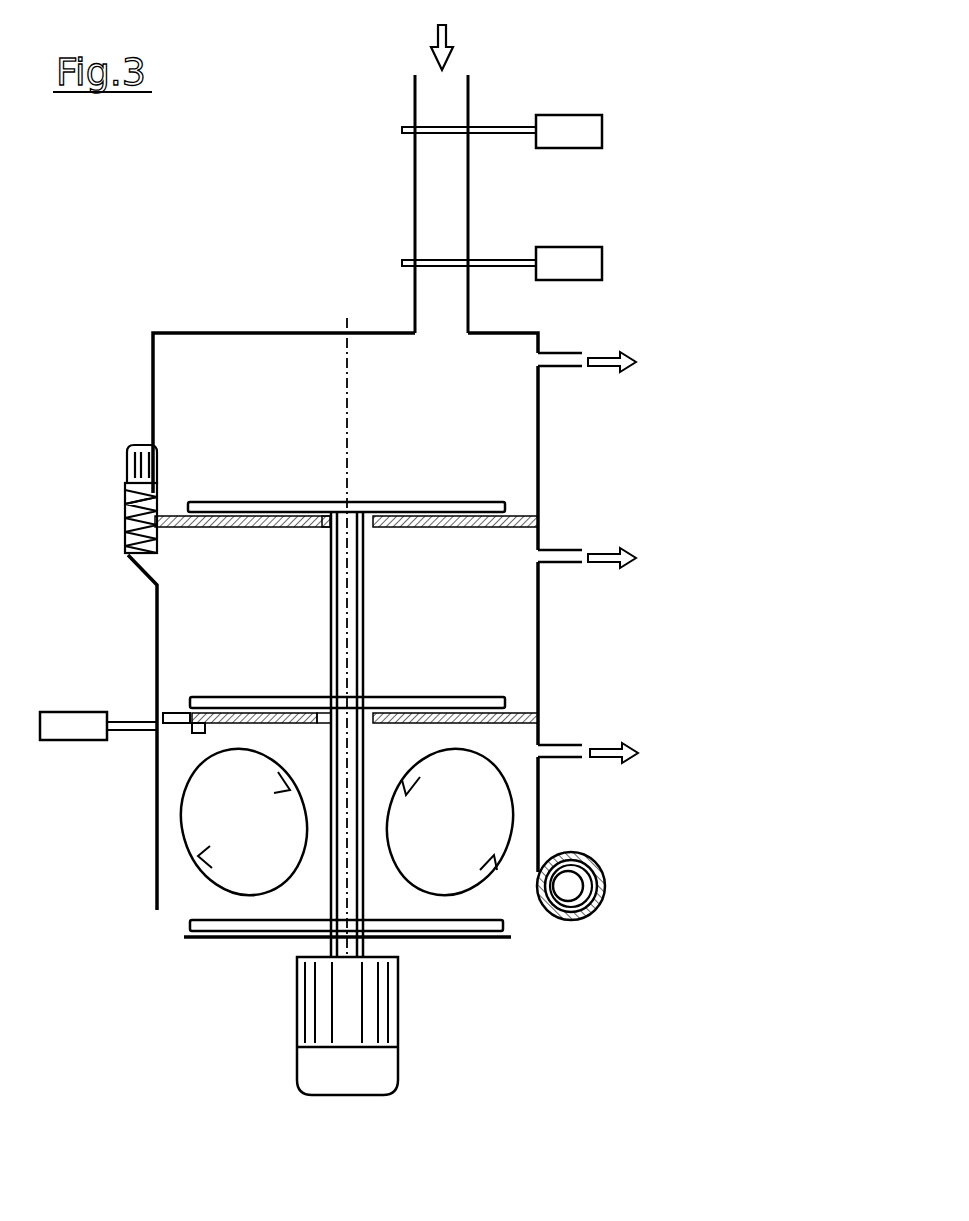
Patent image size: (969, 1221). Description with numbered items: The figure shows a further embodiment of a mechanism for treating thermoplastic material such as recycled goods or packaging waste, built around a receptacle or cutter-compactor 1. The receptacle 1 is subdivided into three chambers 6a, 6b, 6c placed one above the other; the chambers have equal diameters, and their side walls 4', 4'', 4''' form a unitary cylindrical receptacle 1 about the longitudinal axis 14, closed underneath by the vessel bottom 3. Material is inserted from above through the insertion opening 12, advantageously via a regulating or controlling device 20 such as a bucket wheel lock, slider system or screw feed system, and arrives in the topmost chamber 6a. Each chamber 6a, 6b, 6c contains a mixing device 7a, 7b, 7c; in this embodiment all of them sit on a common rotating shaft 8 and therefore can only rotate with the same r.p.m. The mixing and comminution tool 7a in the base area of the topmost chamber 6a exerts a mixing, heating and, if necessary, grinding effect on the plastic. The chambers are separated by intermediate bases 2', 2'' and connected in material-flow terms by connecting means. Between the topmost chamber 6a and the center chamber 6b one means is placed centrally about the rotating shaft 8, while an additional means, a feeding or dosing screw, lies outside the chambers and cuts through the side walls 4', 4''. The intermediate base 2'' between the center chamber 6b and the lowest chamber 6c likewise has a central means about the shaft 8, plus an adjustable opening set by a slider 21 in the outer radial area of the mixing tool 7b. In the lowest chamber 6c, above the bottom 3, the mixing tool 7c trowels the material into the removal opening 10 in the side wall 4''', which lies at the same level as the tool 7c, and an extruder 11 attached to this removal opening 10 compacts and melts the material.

The receptacle or cutter-compactor 1 is at (604, 318).
The intermediate base 2' is at (346, 546).
The intermediate base 2'' is at (365, 743).
The vessel bottom 3 is at (226, 938).
The side wall 4' is at (625, 395).
The side wall 4'' is at (587, 596).
The side wall 4''' is at (588, 790).
The topmost chamber 6a is at (345, 419).
The center chamber 6b is at (345, 614).
The lowest chamber 6c is at (347, 822).
The mixing and comminution tool 7a is at (388, 502).
The mixing tool 7b is at (388, 698).
The mixing tool 7c is at (388, 921).
The common rotating shaft 8 is at (356, 617).
The removal opening 10 is at (538, 895).
The extruder 11 is at (598, 905).
The insertion opening 12 is at (464, 62).
The longitudinal axis 14 is at (343, 357).
The regulating or controlling device 20 is at (368, 200).
The slider 21 is at (71, 732).